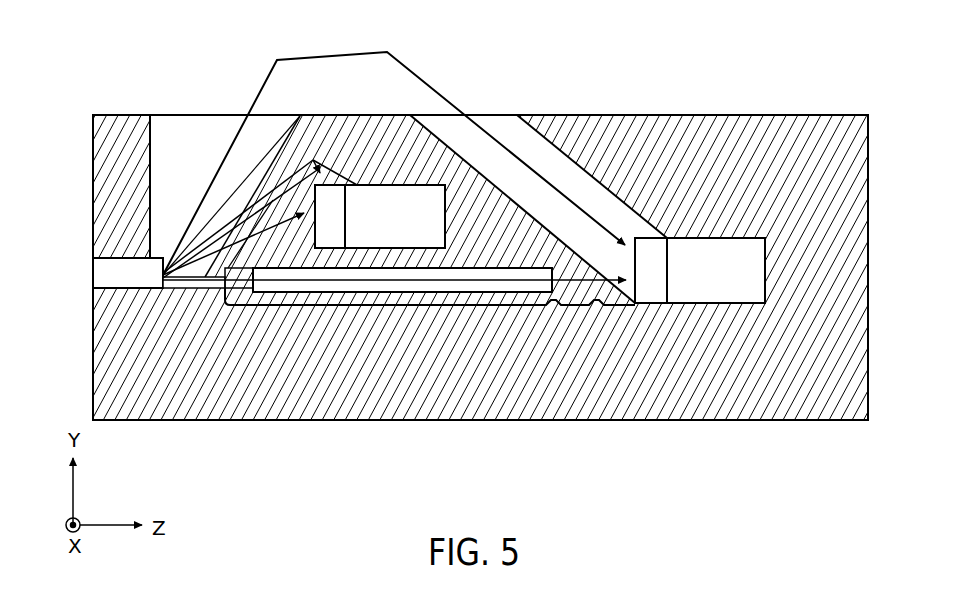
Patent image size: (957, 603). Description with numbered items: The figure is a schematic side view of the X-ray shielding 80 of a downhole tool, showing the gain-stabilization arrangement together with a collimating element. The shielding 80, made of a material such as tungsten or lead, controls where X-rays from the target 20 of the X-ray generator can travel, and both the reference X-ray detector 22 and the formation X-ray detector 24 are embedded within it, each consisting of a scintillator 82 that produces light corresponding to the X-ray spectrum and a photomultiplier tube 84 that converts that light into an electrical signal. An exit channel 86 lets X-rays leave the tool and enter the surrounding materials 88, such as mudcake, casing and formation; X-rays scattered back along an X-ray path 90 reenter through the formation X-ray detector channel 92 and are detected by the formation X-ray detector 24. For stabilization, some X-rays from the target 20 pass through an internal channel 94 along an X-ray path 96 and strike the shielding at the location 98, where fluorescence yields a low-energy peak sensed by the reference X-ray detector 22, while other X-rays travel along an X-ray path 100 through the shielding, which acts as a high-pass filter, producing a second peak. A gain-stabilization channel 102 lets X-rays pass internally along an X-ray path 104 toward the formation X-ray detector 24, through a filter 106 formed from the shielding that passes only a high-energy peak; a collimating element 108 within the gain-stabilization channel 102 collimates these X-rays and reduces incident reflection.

The target 20 is at (93, 272).
The reference X-ray detector 22 is at (415, 173).
The formation X-ray detector 24 is at (718, 304).
The X-ray shielding 80 is at (155, 387).
The scintillator 82 is at (340, 223).
The photomultiplier tube 84 is at (407, 223).
The exit channel 86 is at (180, 122).
The surrounding materials 88 is at (538, 39).
The X-ray path 90 is at (430, 85).
The formation X-ray detector channel 92 is at (540, 125).
The internal channel 94 is at (300, 148).
The X-ray path 96 is at (237, 211).
The impact location 98 is at (332, 140).
The X-ray path 100 is at (240, 243).
The gain-stabilization channel 102 is at (383, 306).
The X-ray path 104 is at (197, 279).
The filter 106 is at (590, 306).
The collimating element 108 is at (223, 277).